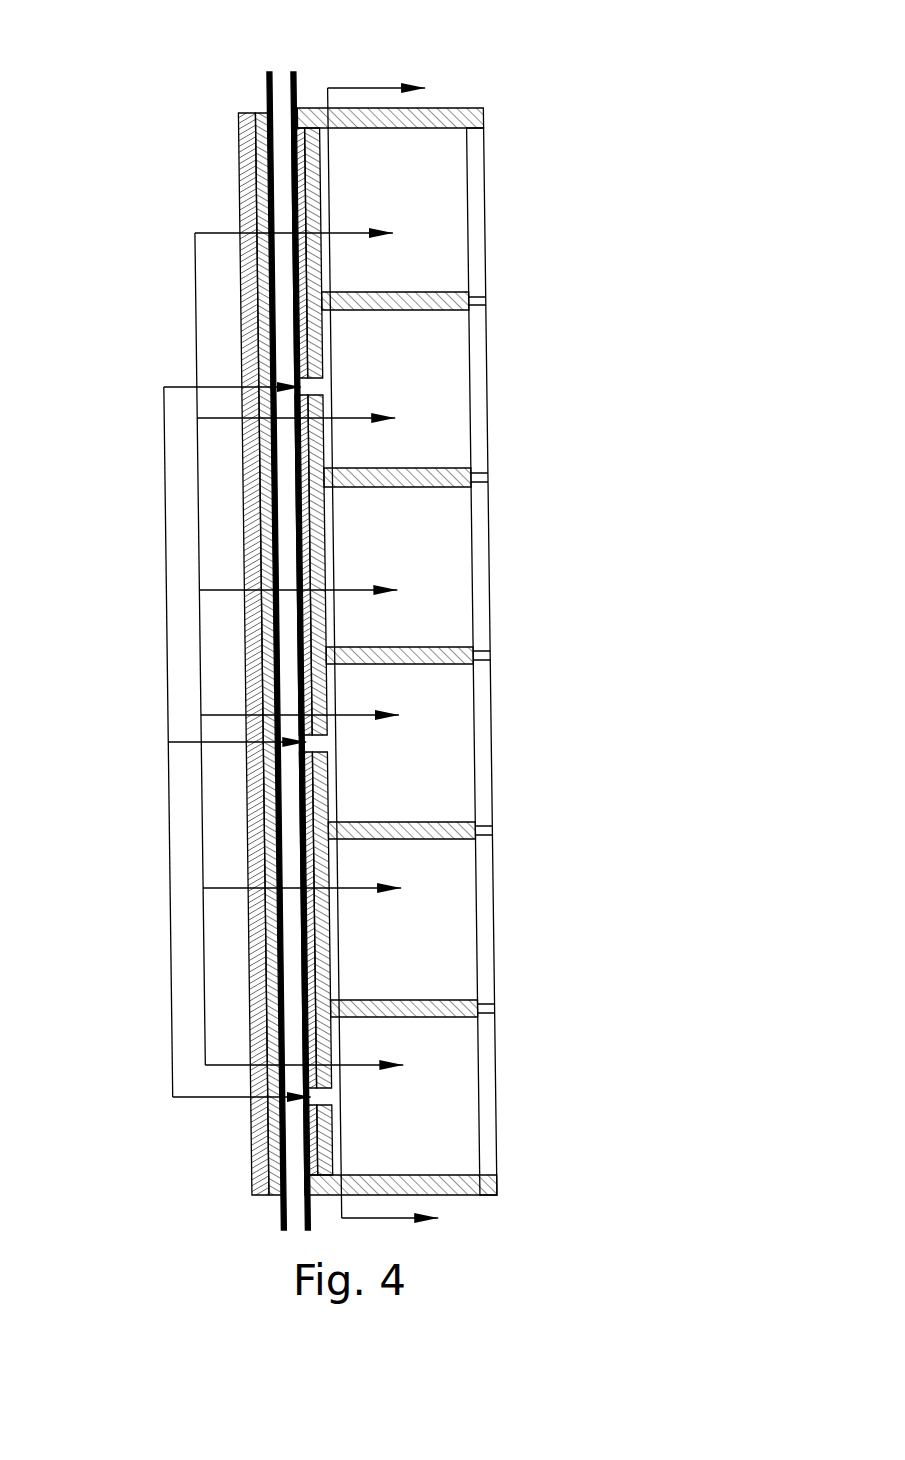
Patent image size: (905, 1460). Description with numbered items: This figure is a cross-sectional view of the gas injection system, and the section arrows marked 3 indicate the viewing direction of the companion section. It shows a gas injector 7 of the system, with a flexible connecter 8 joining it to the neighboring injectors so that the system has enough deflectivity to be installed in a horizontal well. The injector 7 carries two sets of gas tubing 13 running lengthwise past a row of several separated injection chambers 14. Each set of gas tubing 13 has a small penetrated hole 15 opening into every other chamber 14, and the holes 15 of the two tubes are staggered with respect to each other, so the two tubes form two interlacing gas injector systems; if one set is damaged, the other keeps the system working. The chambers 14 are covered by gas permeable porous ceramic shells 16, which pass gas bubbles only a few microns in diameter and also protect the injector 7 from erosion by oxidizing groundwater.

The section line of FIG. 3 is at (407, 656).
The gas injector 7 is at (235, 128).
The flexible connecter 8 is at (267, 83).
The gas tubing 13 is at (278, 192).
The injection chamber 14 is at (202, 654).
The penetrated hole 15 is at (203, 827).
The gas permeable porous ceramic shell 16 is at (489, 207).